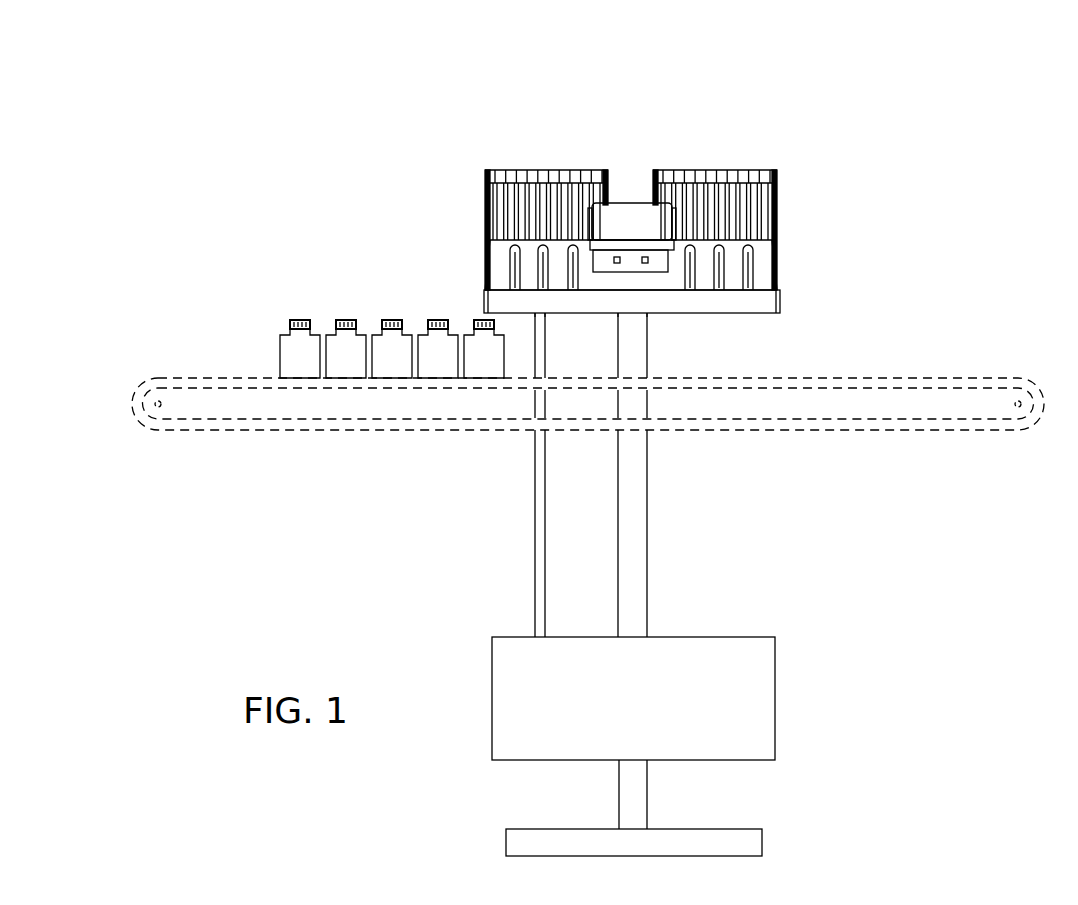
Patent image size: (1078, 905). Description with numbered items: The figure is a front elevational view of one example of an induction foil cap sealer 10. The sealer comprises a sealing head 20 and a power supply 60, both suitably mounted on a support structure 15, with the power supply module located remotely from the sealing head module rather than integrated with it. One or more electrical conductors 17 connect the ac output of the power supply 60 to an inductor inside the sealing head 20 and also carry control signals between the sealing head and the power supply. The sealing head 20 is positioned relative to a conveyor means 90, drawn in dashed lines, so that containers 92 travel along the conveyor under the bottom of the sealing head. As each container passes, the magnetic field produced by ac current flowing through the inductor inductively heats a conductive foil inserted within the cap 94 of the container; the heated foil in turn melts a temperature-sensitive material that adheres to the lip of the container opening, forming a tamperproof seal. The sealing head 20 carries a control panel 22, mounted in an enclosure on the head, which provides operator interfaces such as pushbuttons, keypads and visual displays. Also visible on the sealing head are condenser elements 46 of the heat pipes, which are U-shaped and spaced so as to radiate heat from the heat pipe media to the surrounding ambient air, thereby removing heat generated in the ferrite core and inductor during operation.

The induction foil cap sealer 10 is at (857, 97).
The sealing head 20 is at (788, 257).
The control panel 22 is at (636, 223).
The condenser elements 46 is at (693, 187).
The conveyor means 90 is at (927, 382).
The containers 92 is at (298, 350).
The cap 94 is at (300, 320).
The electrical conductors 17 is at (538, 548).
The support structure 15 is at (635, 550).
The power supply 60 is at (727, 705).